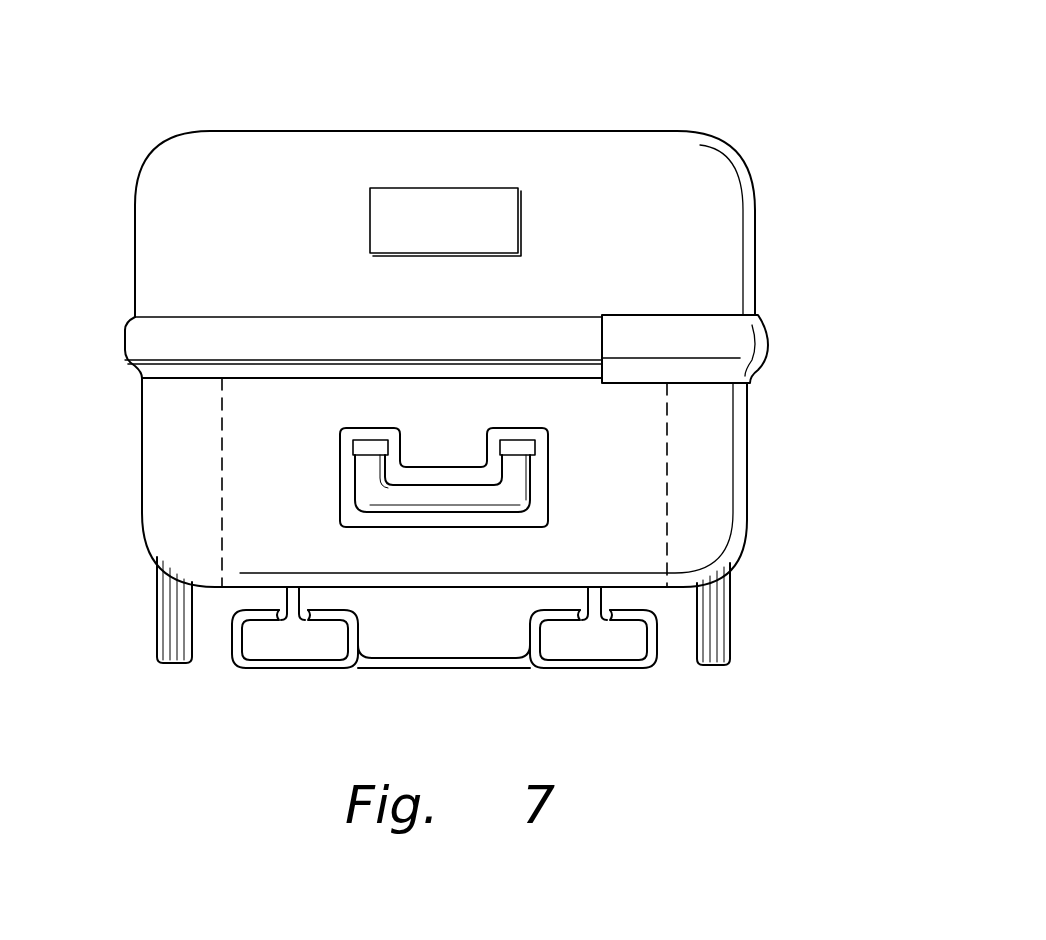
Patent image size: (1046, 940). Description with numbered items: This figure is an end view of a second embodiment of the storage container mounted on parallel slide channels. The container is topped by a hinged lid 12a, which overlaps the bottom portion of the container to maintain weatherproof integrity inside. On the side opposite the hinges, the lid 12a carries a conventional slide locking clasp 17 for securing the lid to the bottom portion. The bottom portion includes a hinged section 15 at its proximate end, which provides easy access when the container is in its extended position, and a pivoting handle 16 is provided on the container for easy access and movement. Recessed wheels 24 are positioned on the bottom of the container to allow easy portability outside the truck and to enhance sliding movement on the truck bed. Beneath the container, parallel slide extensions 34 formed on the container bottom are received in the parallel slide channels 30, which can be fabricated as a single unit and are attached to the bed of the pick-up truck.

The hinged lid 12a is at (590, 132).
The hinged section 15 is at (140, 460).
The pivoting handles 16 is at (532, 490).
The slide, locking clasp 17 is at (760, 365).
The recessed wheels 24 is at (157, 662).
The parallel slide channels 30 is at (250, 670).
The parallel slide extensions 34 is at (300, 592).